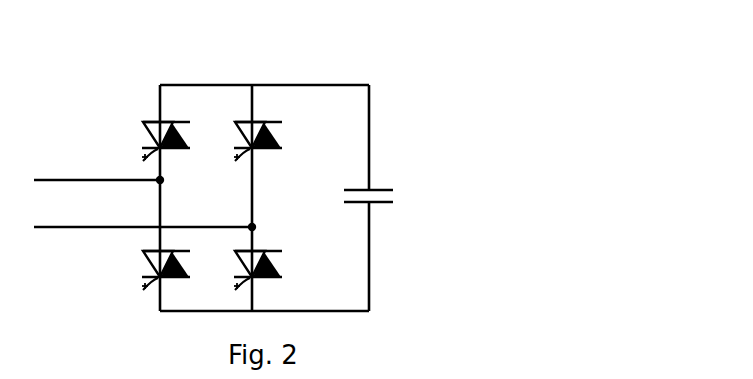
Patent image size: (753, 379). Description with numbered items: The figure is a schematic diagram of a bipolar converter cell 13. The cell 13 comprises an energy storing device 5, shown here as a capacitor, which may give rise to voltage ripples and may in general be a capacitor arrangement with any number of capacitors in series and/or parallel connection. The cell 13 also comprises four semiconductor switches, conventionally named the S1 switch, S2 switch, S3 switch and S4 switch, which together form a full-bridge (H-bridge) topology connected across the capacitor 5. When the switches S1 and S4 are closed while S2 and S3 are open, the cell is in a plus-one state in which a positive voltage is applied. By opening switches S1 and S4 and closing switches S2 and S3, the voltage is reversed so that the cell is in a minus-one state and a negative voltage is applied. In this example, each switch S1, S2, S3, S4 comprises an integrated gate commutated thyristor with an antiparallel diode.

The bipolar cell 13 is at (415, 92).
The energy storing device 5 is at (380, 203).
The S1 switch S1 is at (141, 141).
The S2 switch S2 is at (140, 270).
The S3 switch S3 is at (280, 141).
The S4 switch S4 is at (280, 270).